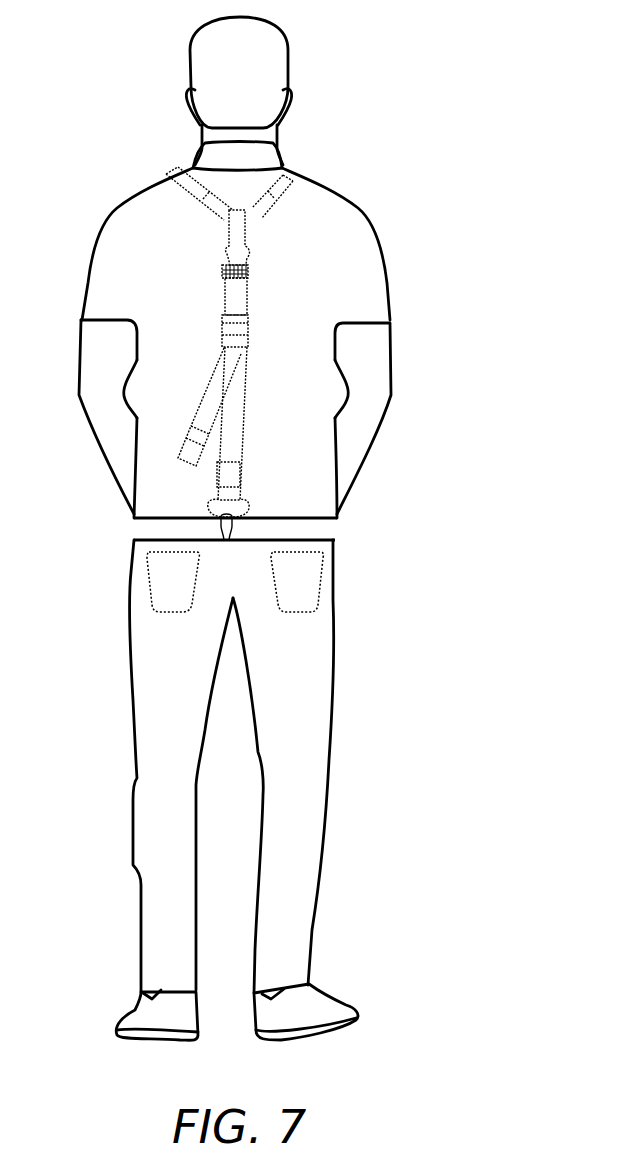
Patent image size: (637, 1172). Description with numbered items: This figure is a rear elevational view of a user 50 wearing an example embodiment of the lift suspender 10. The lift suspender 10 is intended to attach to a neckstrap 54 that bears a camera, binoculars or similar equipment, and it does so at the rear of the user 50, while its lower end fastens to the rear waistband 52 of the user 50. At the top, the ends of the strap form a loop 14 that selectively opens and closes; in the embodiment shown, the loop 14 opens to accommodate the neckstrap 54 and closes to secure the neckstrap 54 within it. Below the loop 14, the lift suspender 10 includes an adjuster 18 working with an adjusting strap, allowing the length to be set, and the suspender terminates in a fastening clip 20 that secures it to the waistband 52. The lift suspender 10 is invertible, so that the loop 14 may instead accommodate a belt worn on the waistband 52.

The lift suspender 10 is at (252, 323).
The loop 14 is at (246, 225).
The adjuster 18 is at (248, 323).
The fastening clip 20 is at (224, 520).
The user 50 is at (299, 528).
The rear waistband 52 is at (325, 530).
The neckstrap 54 is at (168, 178).